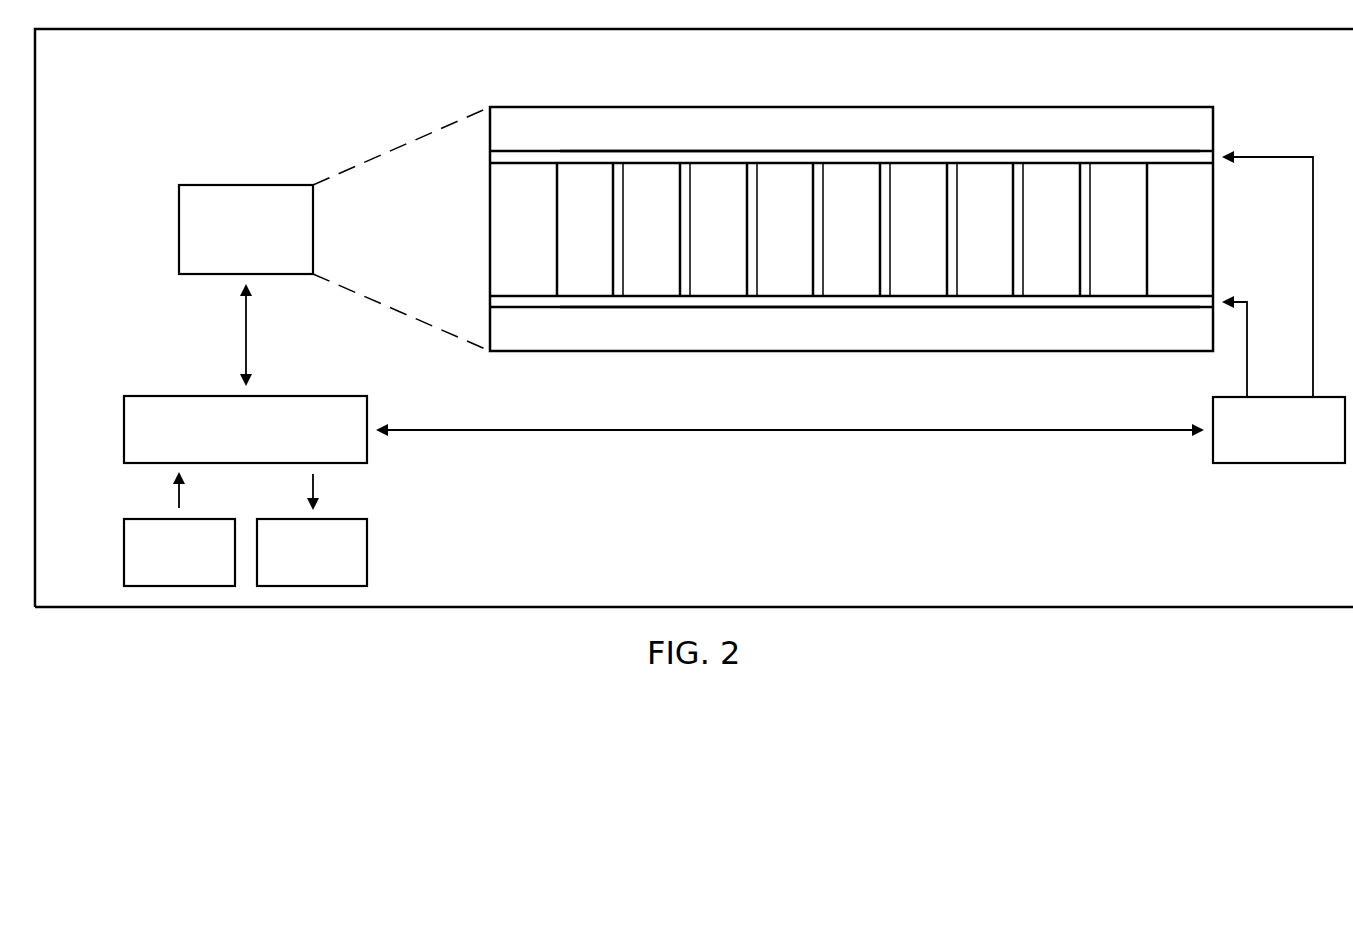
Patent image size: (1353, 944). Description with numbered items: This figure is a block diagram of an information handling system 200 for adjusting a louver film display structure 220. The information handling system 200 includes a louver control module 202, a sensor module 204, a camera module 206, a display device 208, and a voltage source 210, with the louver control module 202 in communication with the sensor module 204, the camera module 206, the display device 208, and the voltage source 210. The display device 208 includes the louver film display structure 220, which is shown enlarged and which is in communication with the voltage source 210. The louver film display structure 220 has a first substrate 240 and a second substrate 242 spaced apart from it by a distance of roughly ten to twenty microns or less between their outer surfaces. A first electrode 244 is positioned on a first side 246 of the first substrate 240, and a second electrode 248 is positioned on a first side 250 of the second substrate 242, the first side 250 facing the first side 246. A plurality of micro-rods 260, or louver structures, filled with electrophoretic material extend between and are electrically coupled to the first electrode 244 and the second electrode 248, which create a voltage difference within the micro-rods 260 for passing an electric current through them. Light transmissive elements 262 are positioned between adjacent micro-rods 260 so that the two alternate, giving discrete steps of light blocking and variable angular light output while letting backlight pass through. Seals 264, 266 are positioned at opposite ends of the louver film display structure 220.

The information handling system 200 is at (806, 546).
The louver control module 202 is at (124, 442).
The sensor module 204 is at (124, 553).
The camera module 206 is at (367, 553).
The display device 208 is at (179, 228).
The voltage source 210 is at (1280, 463).
The louver film display structure 220 is at (1026, 100).
The first substrate 240 is at (590, 107).
The second substrate 242 is at (590, 351).
The first electrode 244 is at (498, 164).
The first side of the first substrate 246 is at (712, 140).
The second electrode 248 is at (498, 304).
The first side of the second substrate 250 is at (712, 318).
The micro-rods 260 is at (884, 290).
The light transmissive elements 262 is at (850, 172).
The seal 264 is at (1205, 228).
The seal 266 is at (497, 226).